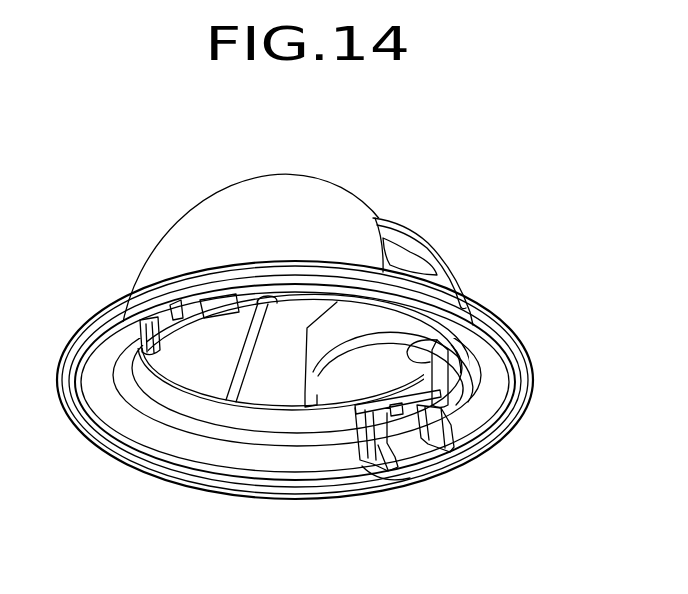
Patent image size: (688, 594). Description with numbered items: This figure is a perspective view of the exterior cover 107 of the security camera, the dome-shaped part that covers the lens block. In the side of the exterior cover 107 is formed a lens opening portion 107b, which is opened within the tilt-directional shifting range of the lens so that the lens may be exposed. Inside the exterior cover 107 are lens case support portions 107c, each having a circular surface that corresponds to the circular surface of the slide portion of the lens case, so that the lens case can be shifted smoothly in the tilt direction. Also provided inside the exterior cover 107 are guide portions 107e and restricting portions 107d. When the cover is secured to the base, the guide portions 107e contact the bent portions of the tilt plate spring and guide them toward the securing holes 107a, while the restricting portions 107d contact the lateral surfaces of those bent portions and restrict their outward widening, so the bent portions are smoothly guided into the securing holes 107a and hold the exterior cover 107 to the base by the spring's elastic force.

The exterior cover 107 is at (461, 175).
The securing hole 107a is at (210, 275).
The lens opening portion 107b is at (438, 250).
The lens case support portion 107c is at (445, 367).
The restricting portion 107d is at (465, 445).
The guide portion 107e is at (430, 462).